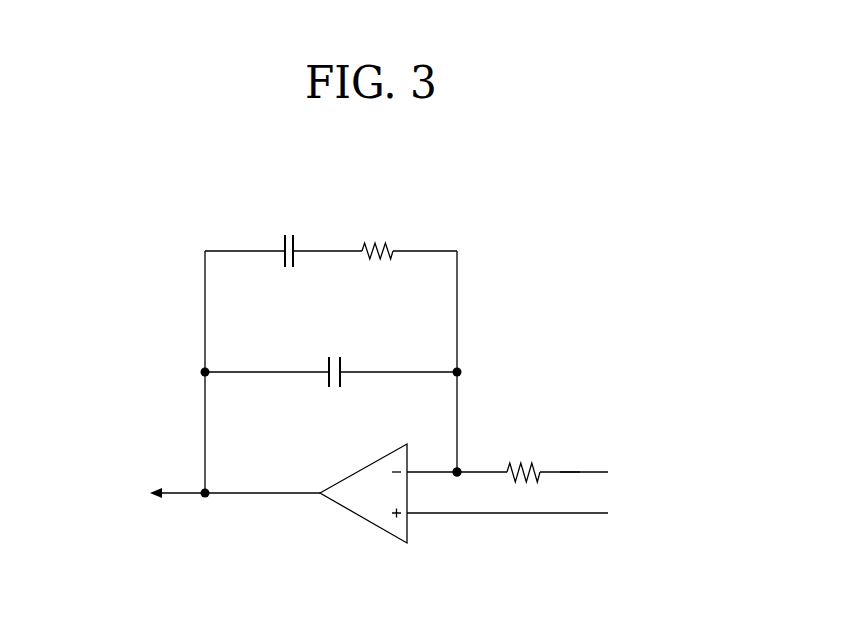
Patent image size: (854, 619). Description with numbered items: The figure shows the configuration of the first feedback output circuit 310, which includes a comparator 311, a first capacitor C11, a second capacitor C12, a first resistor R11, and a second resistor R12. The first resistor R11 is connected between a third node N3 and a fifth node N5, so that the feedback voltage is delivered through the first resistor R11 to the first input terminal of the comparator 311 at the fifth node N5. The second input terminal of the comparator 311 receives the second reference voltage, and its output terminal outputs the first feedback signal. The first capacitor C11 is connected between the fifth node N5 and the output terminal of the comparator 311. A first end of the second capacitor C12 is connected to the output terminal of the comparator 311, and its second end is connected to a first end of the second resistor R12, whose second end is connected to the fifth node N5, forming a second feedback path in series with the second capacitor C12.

The first feedback output circuit 310 is at (492, 203).
The comparator 311 is at (363, 518).
The first capacitor C11 is at (335, 385).
The second capacitor C12 is at (286, 263).
The first resistor R11 is at (523, 458).
The second resistor R12 is at (376, 267).
The fifth node N5 is at (457, 466).
The third node N3 is at (572, 470).